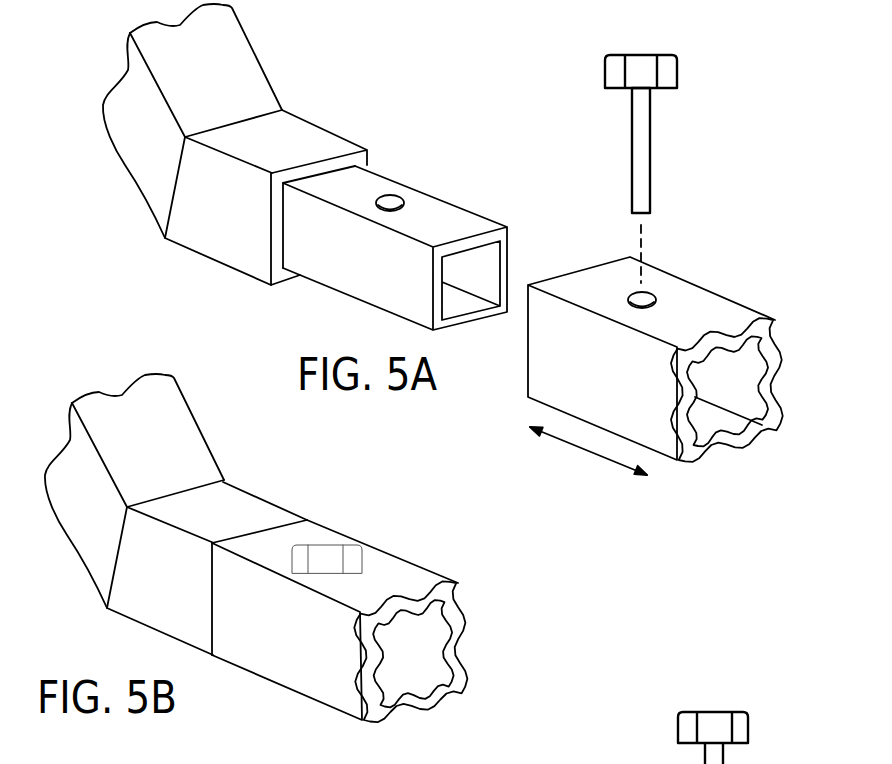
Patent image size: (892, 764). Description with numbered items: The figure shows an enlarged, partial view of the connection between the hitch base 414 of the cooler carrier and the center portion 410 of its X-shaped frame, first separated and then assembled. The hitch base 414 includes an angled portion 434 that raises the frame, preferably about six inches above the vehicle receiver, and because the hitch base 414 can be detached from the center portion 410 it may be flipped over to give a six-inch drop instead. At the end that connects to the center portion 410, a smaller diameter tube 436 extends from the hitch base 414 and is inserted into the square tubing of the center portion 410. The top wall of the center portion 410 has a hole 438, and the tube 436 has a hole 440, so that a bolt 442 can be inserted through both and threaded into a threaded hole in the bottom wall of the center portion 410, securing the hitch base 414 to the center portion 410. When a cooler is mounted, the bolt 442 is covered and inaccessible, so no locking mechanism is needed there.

In FIG. 5A, the center portion 410 is at (720, 293).
In FIG. 5B, the center portion 410 is at (417, 562).
In FIG. 5A, the hitch base 414 is at (315, 123).
In FIG. 5B, the hitch base 414 is at (260, 493).
In FIG. 5A, the angled portion 434 is at (252, 52).
In FIG. 5B, the angled portion 434 is at (202, 433).
In FIG. 5A, the smaller diameter tube 436 is at (482, 220).
In FIG. 5A, the hole 438 is at (660, 270).
In FIG. 5A, the hole 440 is at (395, 198).
In FIG. 5A, the bolt 442 is at (652, 157).
In FIG. 5B, the bolt 442 is at (325, 543).